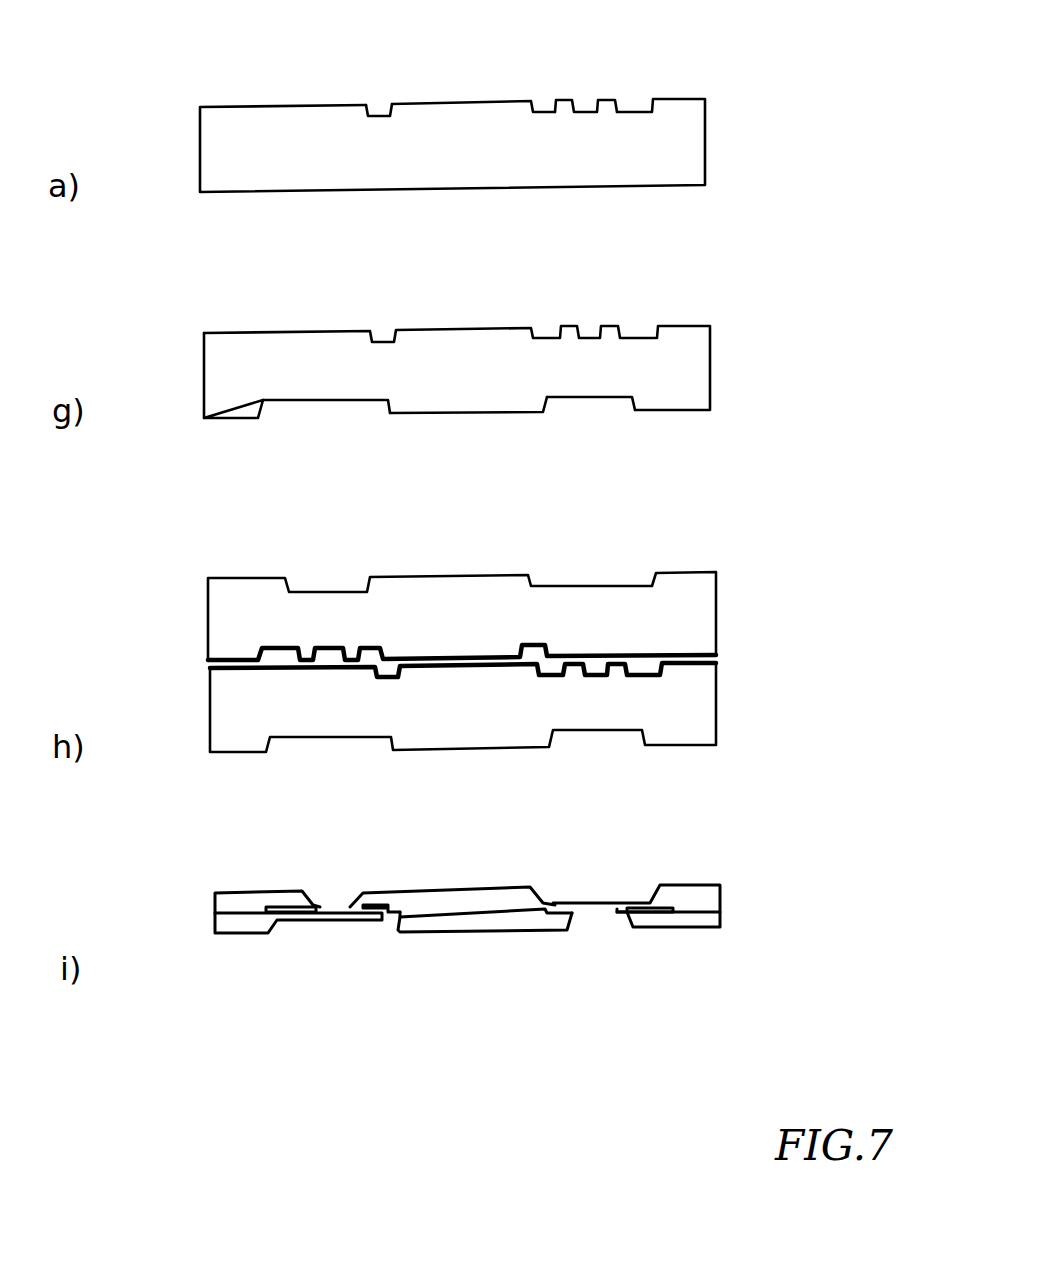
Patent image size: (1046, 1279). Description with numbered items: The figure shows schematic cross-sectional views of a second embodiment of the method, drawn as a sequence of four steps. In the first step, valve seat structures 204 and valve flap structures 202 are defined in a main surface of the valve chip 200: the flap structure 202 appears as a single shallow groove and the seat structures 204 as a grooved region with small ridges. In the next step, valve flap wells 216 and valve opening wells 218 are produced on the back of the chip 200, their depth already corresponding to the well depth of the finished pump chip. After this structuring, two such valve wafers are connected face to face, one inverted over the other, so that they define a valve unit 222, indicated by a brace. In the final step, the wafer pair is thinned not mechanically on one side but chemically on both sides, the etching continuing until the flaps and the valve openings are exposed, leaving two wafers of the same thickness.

The valve chip 200 is at (706, 140).
The valve flap structure 202 is at (378, 105).
The valve seat structure 204 is at (583, 100).
The valve flap well 216 is at (329, 412).
The valve opening well 218 is at (588, 407).
The valve unit 222 is at (784, 568).